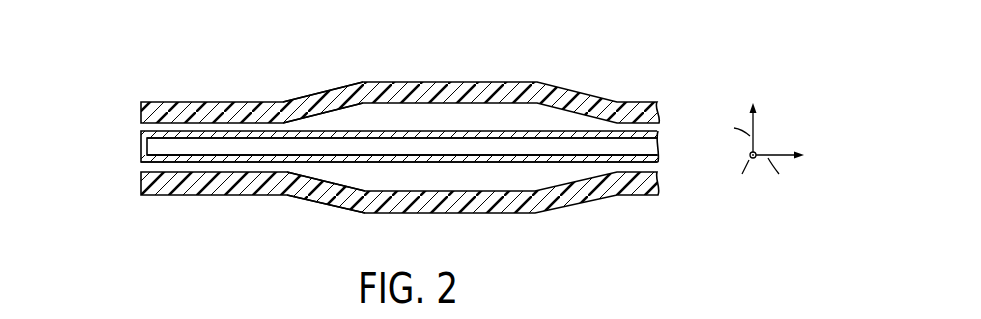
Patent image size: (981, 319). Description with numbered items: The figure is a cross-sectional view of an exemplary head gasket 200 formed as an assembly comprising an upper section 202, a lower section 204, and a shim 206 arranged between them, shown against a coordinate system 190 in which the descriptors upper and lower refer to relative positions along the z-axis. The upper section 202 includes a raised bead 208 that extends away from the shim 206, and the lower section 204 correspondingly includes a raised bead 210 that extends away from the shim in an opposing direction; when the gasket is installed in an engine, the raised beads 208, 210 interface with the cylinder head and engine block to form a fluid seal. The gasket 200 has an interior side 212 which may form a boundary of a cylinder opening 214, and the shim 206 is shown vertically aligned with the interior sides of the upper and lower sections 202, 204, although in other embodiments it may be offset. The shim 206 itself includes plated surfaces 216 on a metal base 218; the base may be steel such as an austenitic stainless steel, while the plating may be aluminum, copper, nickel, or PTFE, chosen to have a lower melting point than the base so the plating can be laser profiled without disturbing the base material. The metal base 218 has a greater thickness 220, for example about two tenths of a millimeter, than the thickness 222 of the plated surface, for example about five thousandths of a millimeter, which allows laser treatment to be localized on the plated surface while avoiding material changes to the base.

The coordinate system 190 is at (787, 131).
The head gasket 200 is at (645, 41).
The upper section 202 is at (137, 78).
The lower section 204 is at (137, 168).
The shim 206 is at (137, 130).
The raised bead 208 is at (315, 77).
The raised bead 210 is at (313, 222).
The interior side 212 is at (105, 122).
The cylinder opening 214 is at (40, 89).
The plated surfaces 216 is at (382, 160).
The metal base 218 is at (460, 148).
The thickness 220 is at (366, 155).
The thickness 222 is at (435, 146).